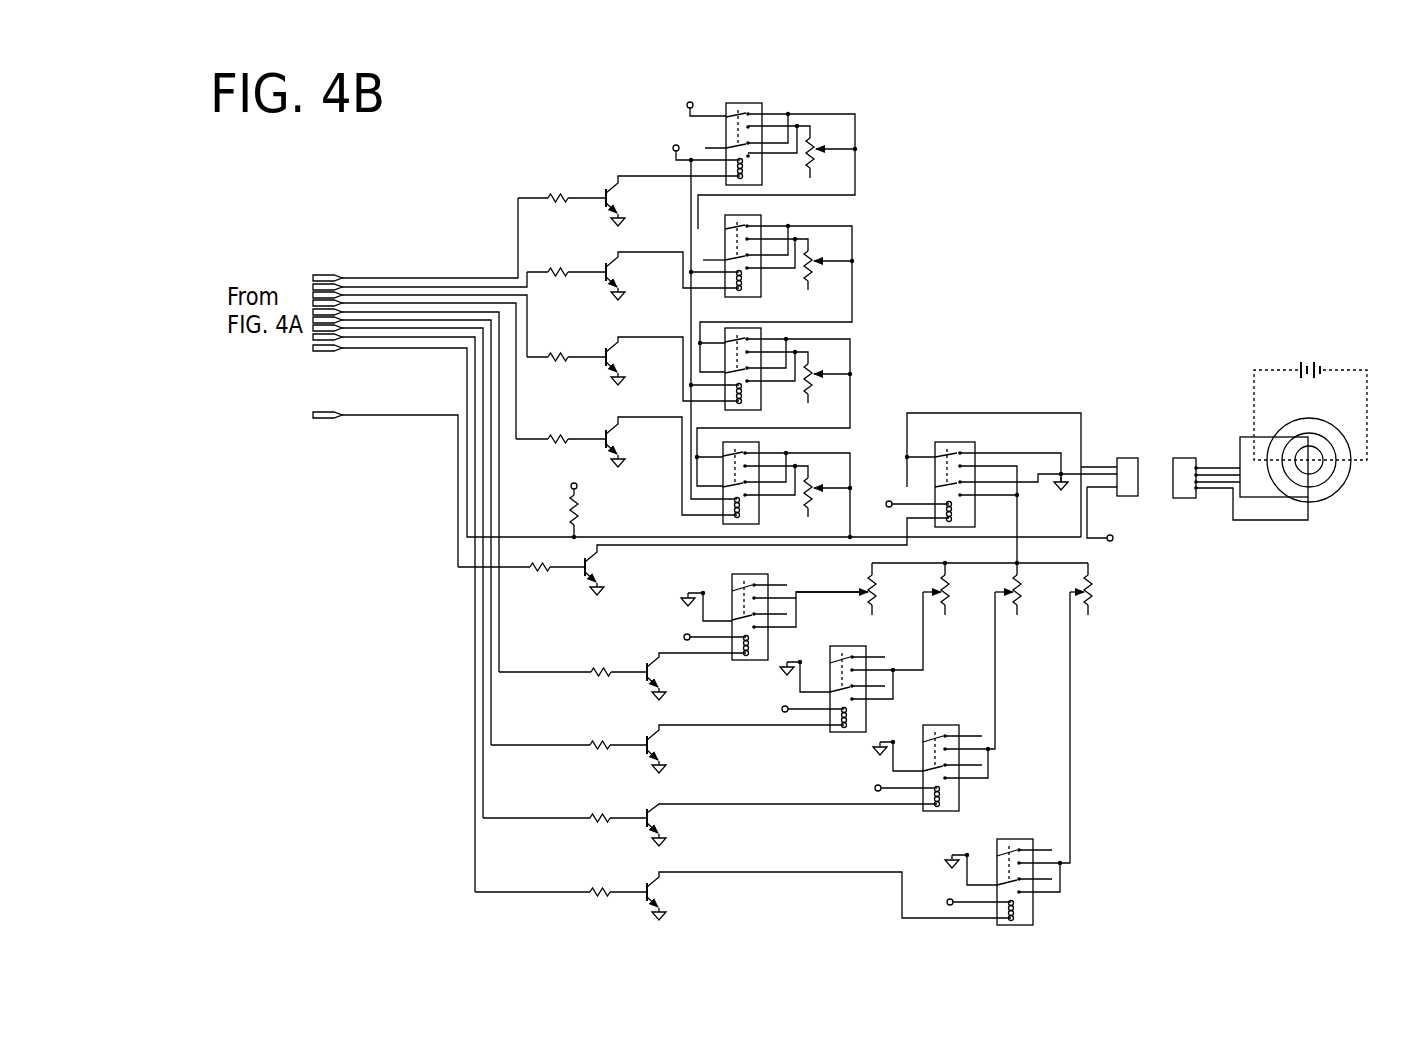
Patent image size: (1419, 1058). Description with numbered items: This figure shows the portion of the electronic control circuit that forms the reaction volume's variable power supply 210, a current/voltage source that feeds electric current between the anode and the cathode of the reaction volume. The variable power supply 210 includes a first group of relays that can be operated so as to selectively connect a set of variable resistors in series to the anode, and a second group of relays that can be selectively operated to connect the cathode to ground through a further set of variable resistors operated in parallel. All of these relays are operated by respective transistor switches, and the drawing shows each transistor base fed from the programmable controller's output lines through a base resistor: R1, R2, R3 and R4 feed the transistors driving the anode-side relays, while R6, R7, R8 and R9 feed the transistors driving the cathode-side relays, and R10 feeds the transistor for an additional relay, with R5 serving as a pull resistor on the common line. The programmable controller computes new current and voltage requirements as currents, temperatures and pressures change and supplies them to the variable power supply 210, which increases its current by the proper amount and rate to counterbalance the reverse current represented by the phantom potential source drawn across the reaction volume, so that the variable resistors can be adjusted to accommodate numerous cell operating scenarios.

The variable power supply 210 is at (984, 312).
The resistor R1 (4.7K) R1 is at (562, 198).
The resistor R2 (4.7K) R2 is at (566, 273).
The resistor R3 (4.7K) R3 is at (566, 358).
The resistor R4 (4.7K) R4 is at (561, 440).
The resistor R5 (10K) R5 is at (595, 510).
The resistor R6 (4.7K) R6 is at (573, 672).
The resistor R7 (4.7K) R7 is at (569, 745).
The resistor R8 (4.7K) R8 is at (565, 817).
The resistor R9 (4.7K) R9 is at (561, 892).
The resistor R10 (4.7K) R10 is at (521, 568).